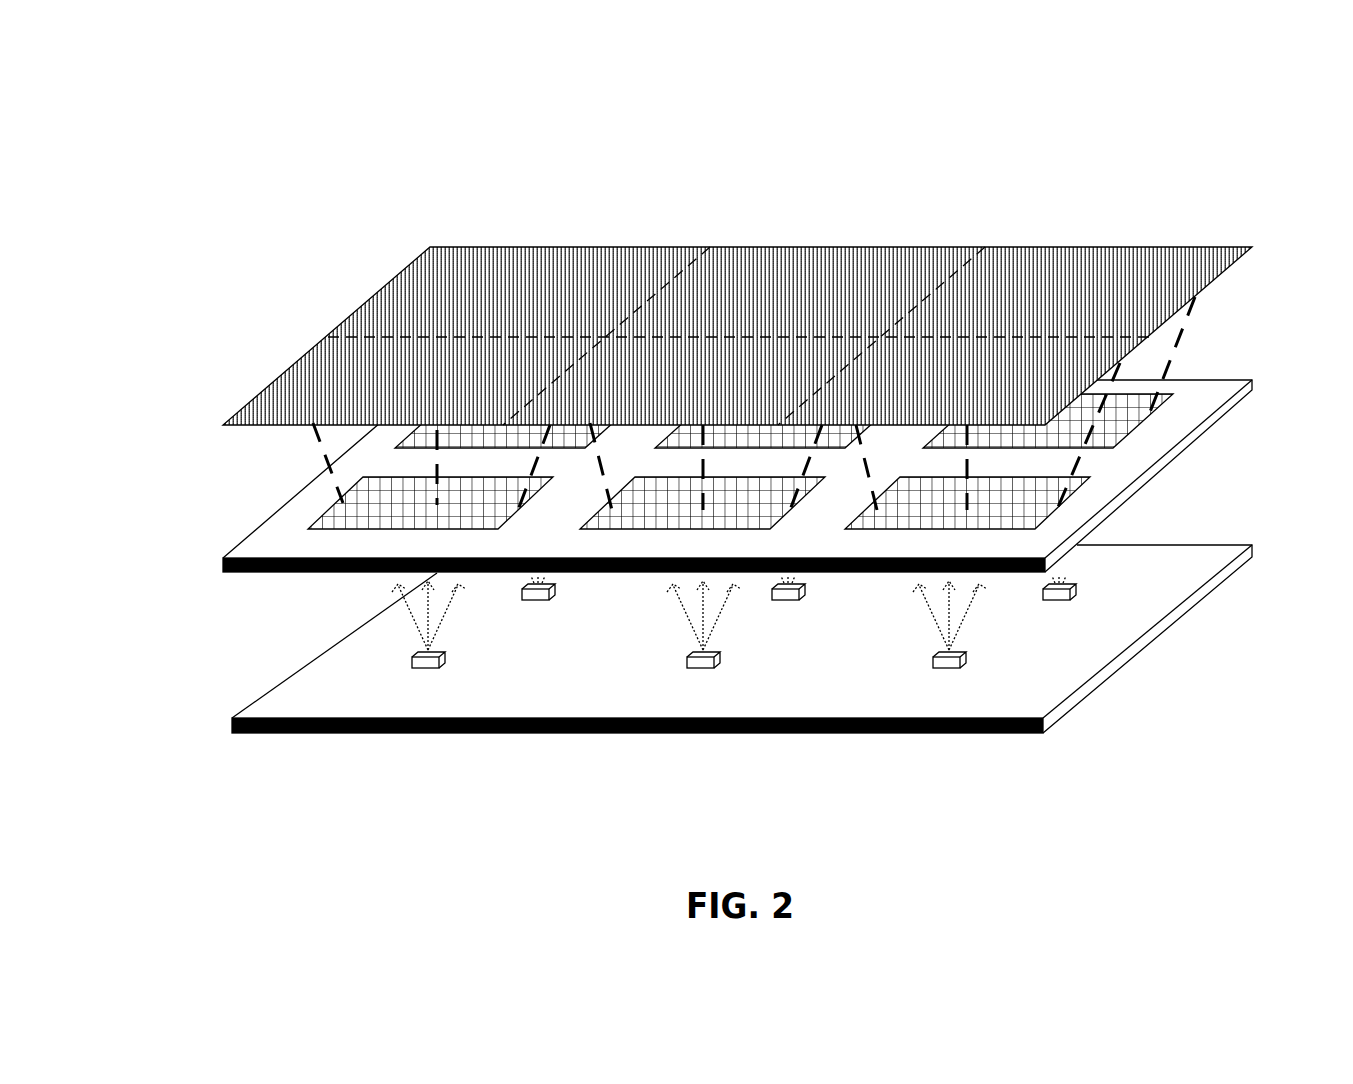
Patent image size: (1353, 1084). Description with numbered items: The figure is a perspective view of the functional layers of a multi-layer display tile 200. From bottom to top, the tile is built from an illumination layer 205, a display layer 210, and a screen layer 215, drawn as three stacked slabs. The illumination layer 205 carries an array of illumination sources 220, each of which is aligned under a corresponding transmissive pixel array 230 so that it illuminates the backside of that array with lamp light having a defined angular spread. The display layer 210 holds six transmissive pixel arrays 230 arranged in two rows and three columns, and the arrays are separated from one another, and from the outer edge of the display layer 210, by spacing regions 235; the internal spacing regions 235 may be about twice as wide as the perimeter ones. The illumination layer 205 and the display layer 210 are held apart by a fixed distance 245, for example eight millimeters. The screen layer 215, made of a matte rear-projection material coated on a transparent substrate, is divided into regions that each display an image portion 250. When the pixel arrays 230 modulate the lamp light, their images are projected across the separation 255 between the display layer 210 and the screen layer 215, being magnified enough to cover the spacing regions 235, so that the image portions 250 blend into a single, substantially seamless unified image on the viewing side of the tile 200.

The multi-layer display tile 200 is at (322, 192).
The illumination layer 205 is at (285, 680).
The display layer 210 is at (268, 520).
The screen layer 215 is at (328, 340).
The illumination source 220 is at (412, 663).
The transmissive pixel array 230 is at (371, 510).
The spacing region 235 is at (266, 541).
The fixed distance 245 is at (1263, 395).
The image portion 250 is at (486, 294).
The separation 255 is at (1263, 252).